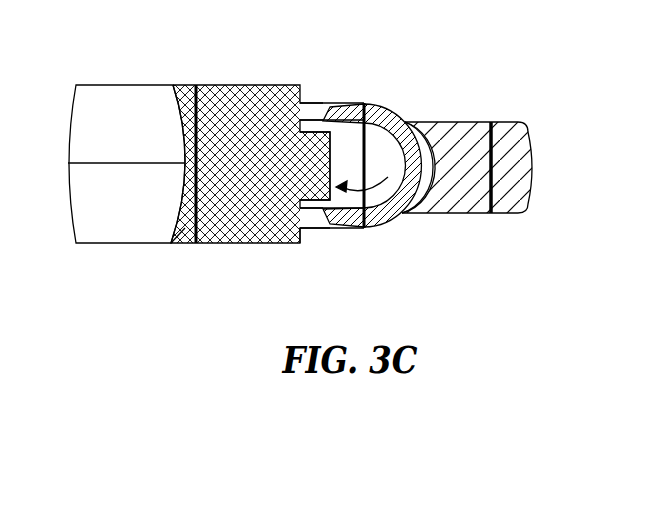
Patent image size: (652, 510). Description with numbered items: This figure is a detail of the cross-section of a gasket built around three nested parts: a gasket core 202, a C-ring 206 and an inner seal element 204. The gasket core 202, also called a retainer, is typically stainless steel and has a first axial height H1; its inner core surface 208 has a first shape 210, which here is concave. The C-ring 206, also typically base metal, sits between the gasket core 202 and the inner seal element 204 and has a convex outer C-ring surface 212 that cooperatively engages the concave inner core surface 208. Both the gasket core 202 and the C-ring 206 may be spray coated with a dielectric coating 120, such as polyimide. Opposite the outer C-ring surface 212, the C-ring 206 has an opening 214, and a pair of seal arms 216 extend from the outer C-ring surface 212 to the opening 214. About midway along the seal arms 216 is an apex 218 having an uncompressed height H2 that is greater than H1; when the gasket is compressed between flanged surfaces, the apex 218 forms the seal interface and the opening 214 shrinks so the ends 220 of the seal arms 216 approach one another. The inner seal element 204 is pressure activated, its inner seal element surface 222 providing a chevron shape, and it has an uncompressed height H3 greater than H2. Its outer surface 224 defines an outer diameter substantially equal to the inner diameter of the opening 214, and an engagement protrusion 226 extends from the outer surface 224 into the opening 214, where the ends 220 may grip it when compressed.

The dielectric coating 120 is at (386, 107).
The gasket core 202 is at (532, 196).
The inner seal element 204 is at (222, 85).
The C-ring 206 is at (428, 143).
The inner core surface 208 is at (432, 182).
The first shape 210 is at (437, 143).
The outer C-ring surface 212 is at (453, 150).
The opening 214 is at (367, 173).
The seal arms 216 is at (357, 105).
The apex 218 is at (360, 230).
The ends 220 is at (315, 215).
The inner seal element surface 222 is at (124, 105).
The outer surface 224 is at (299, 237).
The engagement protrusion 226 is at (308, 164).
The first axial height H1 is at (497, 148).
The uncompressed height of apex H2 is at (356, 122).
The uncompressed height of inner seal element H3 is at (185, 228).